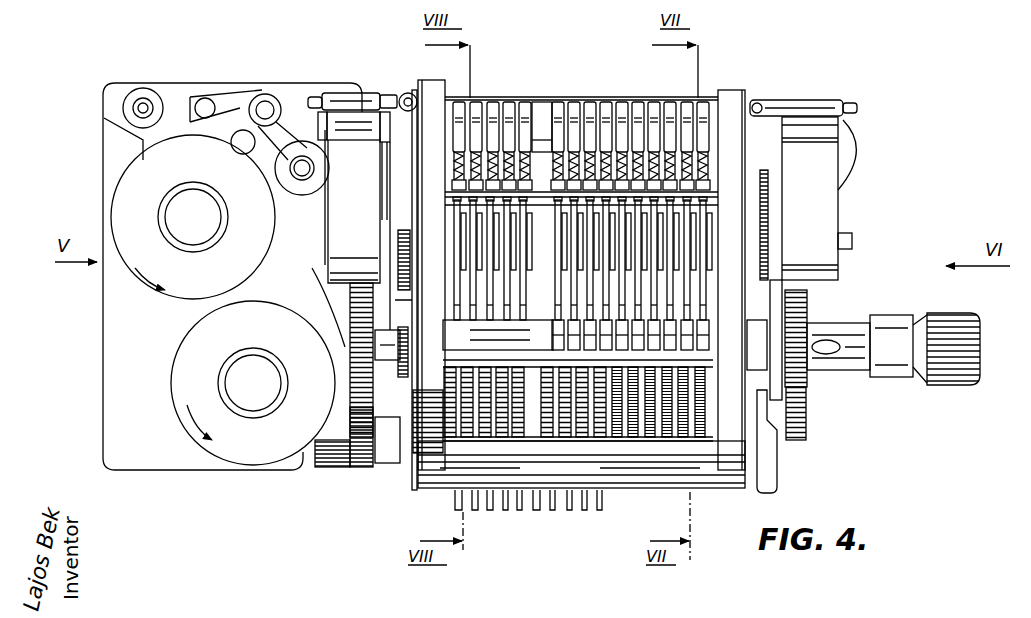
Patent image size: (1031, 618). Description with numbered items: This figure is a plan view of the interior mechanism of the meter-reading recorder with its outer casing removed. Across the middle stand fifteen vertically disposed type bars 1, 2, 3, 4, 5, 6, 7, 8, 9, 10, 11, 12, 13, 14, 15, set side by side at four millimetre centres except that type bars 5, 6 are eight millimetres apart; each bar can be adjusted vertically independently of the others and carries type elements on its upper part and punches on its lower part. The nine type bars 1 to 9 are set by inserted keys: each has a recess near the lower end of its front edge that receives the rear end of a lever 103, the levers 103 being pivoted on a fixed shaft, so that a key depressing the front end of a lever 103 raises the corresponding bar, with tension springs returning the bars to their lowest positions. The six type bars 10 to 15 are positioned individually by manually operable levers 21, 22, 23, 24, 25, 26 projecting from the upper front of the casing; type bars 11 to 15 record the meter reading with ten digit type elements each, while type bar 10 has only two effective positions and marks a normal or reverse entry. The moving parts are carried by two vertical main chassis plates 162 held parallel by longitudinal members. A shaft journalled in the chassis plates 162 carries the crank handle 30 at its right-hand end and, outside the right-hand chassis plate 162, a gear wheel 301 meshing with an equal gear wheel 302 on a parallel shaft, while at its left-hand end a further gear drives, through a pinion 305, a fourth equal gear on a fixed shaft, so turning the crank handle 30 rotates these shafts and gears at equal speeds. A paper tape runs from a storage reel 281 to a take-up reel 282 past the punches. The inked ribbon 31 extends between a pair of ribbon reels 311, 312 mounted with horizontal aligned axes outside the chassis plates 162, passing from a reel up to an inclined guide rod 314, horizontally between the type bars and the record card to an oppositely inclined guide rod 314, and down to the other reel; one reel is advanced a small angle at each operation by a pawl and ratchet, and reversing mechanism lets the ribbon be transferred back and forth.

The type bar 1 is at (459, 103).
The type bar 2 is at (476, 103).
The type bar 3 is at (493, 103).
The type bar 4 is at (509, 103).
The type bar 5 is at (525, 103).
The type bar 6 is at (558, 103).
The type bar 7 is at (574, 103).
The type bar 8 is at (590, 103).
The type bar 9 is at (606, 103).
The type bar 10 is at (622, 103).
The type bar 11 is at (638, 103).
The type bar 12 is at (654, 103).
The type bar 13 is at (670, 103).
The type bar 14 is at (687, 103).
The type bar 15 is at (703, 103).
The manually operable lever 21 is at (625, 225).
The manually operable lever 22 is at (710, 197).
The manually operable lever 23 is at (700, 207).
The manually operable lever 24 is at (700, 220).
The manually operable lever 25 is at (700, 228).
The manually operable lever 26 is at (733, 236).
The crank handle 30 is at (836, 360).
The inked ribbon 31 is at (365, 93).
The lever 103 is at (456, 500).
The main chassis plate 162 is at (432, 90).
The storage reel 281 is at (190, 345).
The take-up reel 282 is at (122, 216).
The gear wheel 301 is at (793, 432).
The gear wheel 302 is at (793, 400).
The pinion 305 is at (355, 470).
The ribbon reel 311 is at (330, 220).
The ribbon reel 312 is at (840, 195).
The inclined guide rod 314 is at (822, 100).